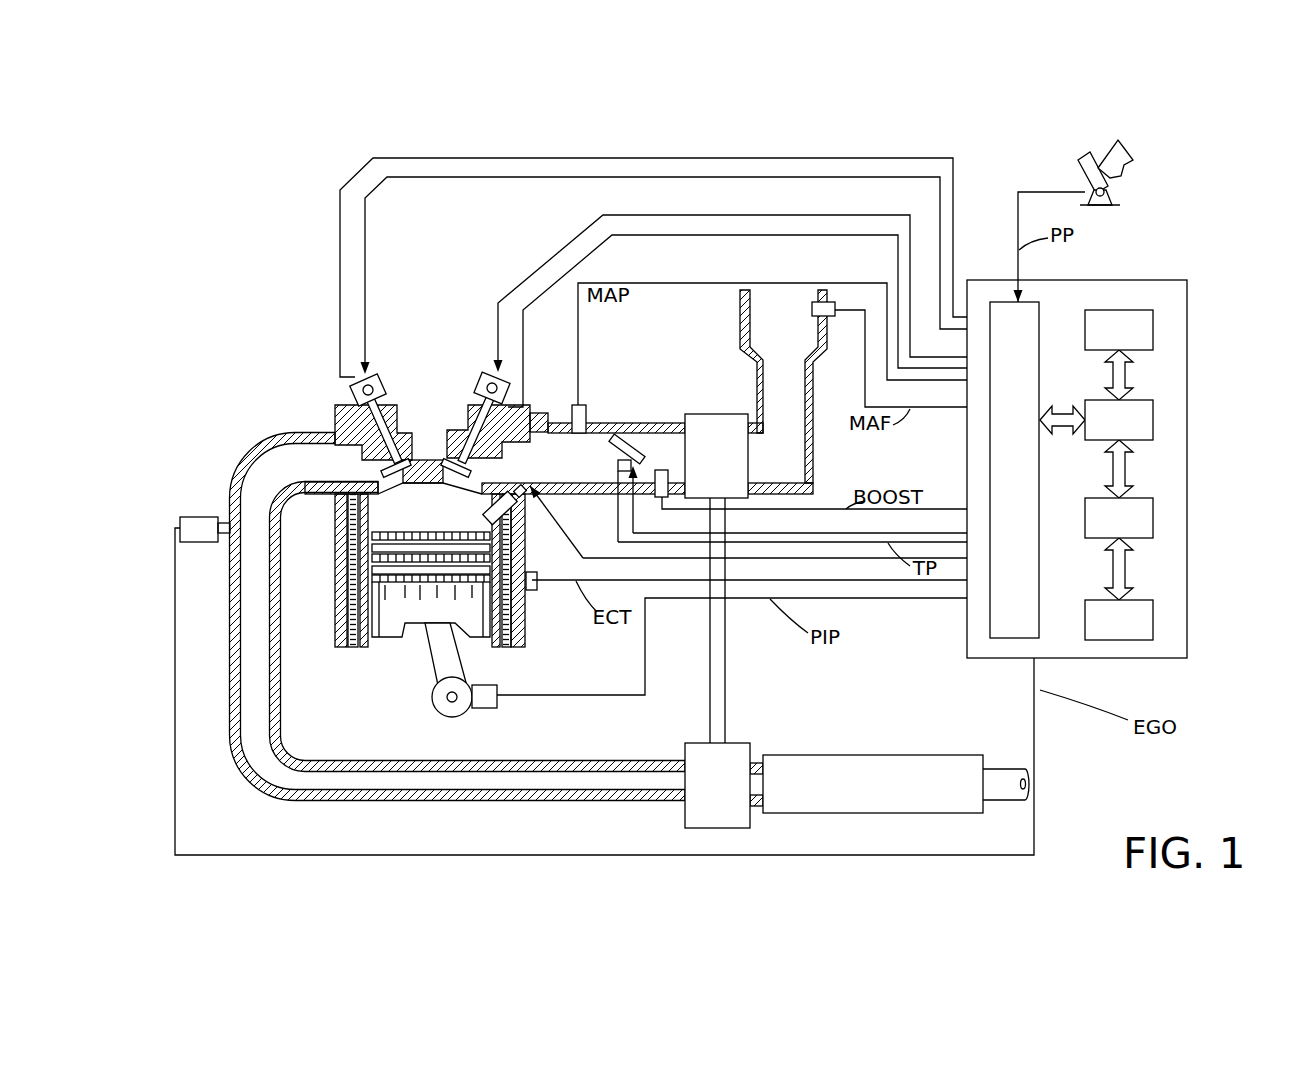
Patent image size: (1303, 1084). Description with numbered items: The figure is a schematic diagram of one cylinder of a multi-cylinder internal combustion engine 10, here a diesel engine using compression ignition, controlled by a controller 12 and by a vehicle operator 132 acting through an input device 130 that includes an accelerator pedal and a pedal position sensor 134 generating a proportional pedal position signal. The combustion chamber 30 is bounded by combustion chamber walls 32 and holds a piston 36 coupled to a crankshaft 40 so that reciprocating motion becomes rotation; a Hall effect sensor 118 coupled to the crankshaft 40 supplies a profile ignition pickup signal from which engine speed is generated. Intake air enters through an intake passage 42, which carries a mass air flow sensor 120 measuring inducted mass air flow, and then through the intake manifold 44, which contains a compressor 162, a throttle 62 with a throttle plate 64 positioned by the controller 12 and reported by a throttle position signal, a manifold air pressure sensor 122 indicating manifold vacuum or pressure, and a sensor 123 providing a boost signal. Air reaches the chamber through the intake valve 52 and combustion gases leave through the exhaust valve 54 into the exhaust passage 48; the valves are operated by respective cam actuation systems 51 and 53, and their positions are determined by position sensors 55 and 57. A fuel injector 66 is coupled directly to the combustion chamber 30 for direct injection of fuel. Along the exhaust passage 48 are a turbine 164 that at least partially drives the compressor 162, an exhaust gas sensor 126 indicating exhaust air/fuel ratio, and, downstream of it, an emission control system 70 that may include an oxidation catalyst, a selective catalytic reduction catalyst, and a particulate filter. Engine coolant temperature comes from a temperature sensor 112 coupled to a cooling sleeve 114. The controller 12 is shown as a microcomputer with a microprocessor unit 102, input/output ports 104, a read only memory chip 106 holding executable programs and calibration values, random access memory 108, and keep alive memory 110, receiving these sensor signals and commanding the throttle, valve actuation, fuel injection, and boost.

The internal combustion engine 10 is at (268, 358).
The controller 12 is at (1121, 455).
The combustion chamber 30 is at (428, 500).
The combustion chamber walls 32 is at (370, 637).
The piston 36 is at (420, 590).
The crankshaft 40 is at (440, 714).
The intake passage 42 is at (771, 333).
The intake manifold 44 is at (573, 461).
The exhaust passage 48 is at (290, 476).
The cam actuation system 51 is at (490, 376).
The intake valve 52 is at (470, 474).
The cam actuation system 53 is at (376, 378).
The exhaust valve 54 is at (334, 440).
The position sensor 55 is at (505, 394).
The position sensor 57 is at (356, 393).
The throttle 62 is at (628, 435).
The throttle plate 64 is at (643, 453).
The fuel injector 66 is at (520, 512).
The emission control system 70 is at (948, 755).
The microprocessor unit 102 is at (1153, 418).
The input/output ports 104 is at (1040, 310).
The read only memory chip 106 is at (1153, 328).
The random access memory 108 is at (1153, 518).
The keep alive memory 110 is at (1153, 622).
The temperature sensor 112 is at (537, 587).
The cooling sleeve 114 is at (528, 626).
The Hall effect sensor 118 is at (490, 710).
The mass air flow sensor 120 is at (830, 318).
The manifold air pressure sensor 122 is at (587, 413).
The sensor 123 is at (656, 497).
The exhaust gas sensor 126 is at (180, 524).
The input device 130 is at (1080, 172).
The vehicle operator 132 is at (1133, 152).
The pedal position sensor 134 is at (1120, 197).
The compressor 162 is at (700, 466).
The turbine 164 is at (700, 796).